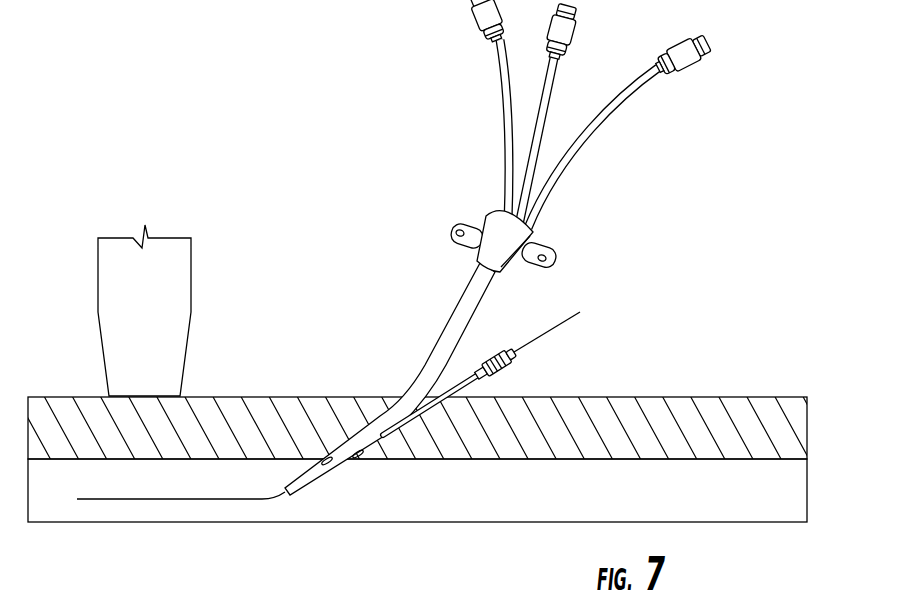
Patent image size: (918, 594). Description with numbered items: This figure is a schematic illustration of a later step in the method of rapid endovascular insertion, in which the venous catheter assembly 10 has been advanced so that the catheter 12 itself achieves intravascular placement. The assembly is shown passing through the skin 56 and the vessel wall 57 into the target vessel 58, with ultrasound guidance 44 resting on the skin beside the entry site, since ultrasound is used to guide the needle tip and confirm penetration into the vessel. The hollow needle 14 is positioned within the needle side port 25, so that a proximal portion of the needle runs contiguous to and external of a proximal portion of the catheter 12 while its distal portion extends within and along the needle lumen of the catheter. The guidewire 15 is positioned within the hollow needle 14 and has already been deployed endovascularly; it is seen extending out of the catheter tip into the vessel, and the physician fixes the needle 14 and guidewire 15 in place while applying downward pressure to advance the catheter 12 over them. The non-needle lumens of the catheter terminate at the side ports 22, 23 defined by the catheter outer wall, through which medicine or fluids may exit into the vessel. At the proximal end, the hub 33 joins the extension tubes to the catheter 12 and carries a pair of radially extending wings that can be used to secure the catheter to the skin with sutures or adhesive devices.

The venous catheter assembly 10 is at (724, 109).
The catheter 12 is at (452, 309).
The needle 14 is at (470, 386).
The guidewire 15 is at (118, 502).
The side port 22 is at (327, 463).
The side port 23 is at (359, 456).
The needle side port 25 is at (380, 440).
The hub 33 is at (475, 228).
The ultrasound guidance 44 is at (190, 288).
The skin 56 is at (748, 397).
The vessel wall 57 is at (708, 458).
The target vessel 58 is at (735, 502).